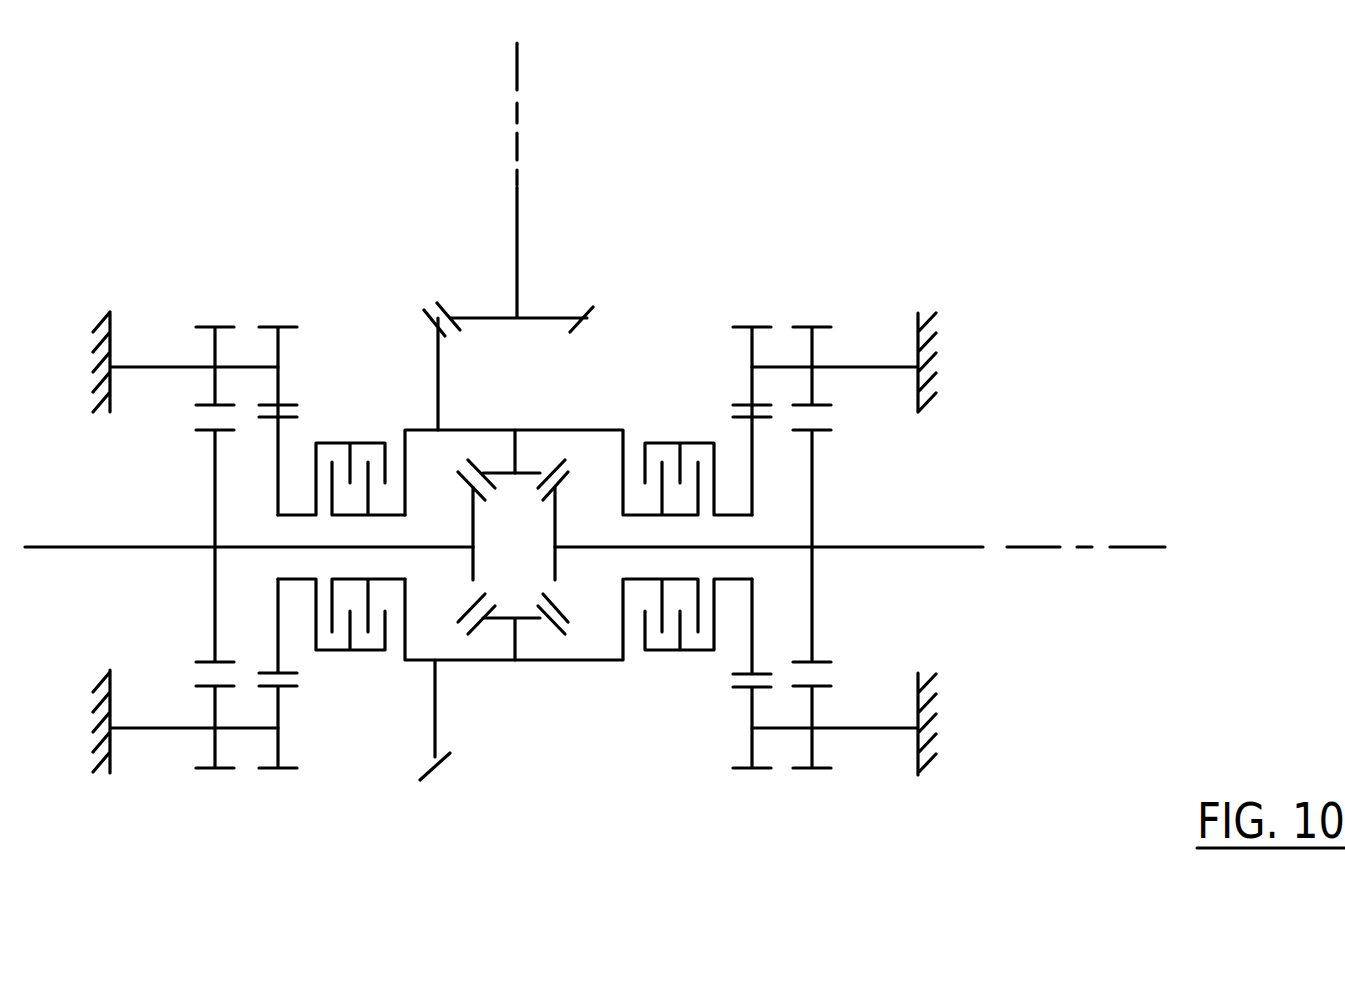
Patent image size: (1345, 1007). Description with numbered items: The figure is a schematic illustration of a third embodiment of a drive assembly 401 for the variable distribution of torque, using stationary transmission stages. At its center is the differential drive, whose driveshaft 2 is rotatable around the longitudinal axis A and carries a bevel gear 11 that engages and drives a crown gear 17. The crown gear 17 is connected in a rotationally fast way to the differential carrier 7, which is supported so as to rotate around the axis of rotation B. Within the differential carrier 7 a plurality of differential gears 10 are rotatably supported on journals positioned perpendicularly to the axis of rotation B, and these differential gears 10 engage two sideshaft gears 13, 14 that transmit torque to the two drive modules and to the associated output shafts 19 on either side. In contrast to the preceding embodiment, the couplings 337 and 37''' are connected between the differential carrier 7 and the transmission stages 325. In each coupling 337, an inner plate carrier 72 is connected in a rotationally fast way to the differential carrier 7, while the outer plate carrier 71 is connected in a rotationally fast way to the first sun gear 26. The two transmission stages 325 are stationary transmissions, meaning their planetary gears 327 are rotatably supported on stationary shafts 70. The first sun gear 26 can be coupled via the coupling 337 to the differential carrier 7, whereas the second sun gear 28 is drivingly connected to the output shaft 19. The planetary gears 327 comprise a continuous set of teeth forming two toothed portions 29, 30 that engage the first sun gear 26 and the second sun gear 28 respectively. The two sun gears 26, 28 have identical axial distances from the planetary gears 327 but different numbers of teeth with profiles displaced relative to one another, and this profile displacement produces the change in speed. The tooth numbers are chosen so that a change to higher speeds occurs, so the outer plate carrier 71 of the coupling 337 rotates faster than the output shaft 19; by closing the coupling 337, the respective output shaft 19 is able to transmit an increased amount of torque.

The driveshaft 2 is at (517, 233).
The differential carrier 7 is at (487, 430).
The differential gears 10 is at (535, 470).
The bevel gear 11 is at (592, 308).
The sideshaft gear 13 is at (469, 579).
The sideshaft gear 14 is at (561, 579).
The crown gear 17 is at (433, 773).
The output shaft 19 is at (75, 545).
The first sun gear 26 is at (287, 673).
The second sun gear 28 is at (203, 658).
The toothed portion 29 is at (287, 325).
The toothed portion 30 is at (207, 325).
The stationary shafts 70 is at (160, 728).
The outer plate carrier 71 is at (332, 443).
The inner plate carrier 72 is at (383, 513).
The transmission stages 325 is at (508, 356).
The planetary gears 327 is at (468, 701).
The coupling 337 is at (341, 434).
The coupling 37''' is at (688, 470).
The drive assembly 401 is at (687, 136).
The longitudinal axis A is at (518, 68).
The axis of rotation B is at (1130, 547).